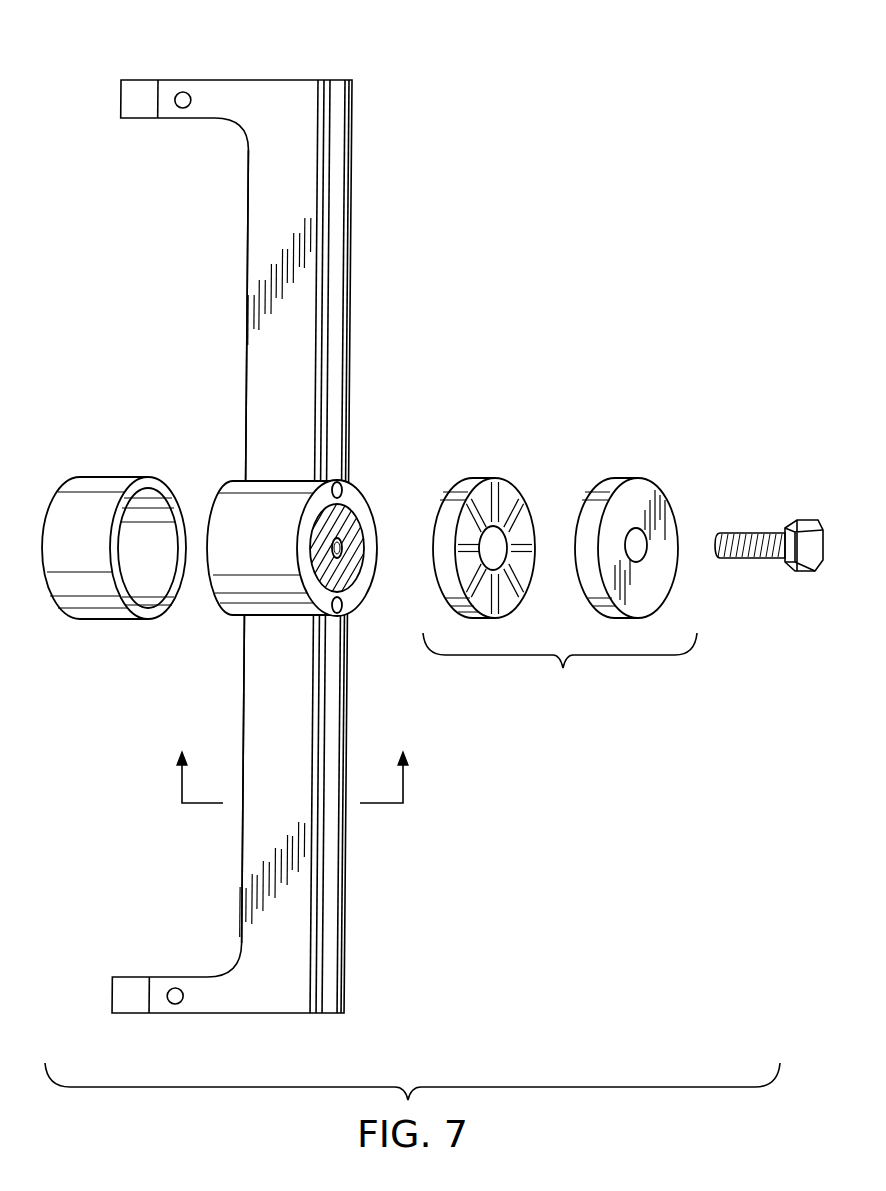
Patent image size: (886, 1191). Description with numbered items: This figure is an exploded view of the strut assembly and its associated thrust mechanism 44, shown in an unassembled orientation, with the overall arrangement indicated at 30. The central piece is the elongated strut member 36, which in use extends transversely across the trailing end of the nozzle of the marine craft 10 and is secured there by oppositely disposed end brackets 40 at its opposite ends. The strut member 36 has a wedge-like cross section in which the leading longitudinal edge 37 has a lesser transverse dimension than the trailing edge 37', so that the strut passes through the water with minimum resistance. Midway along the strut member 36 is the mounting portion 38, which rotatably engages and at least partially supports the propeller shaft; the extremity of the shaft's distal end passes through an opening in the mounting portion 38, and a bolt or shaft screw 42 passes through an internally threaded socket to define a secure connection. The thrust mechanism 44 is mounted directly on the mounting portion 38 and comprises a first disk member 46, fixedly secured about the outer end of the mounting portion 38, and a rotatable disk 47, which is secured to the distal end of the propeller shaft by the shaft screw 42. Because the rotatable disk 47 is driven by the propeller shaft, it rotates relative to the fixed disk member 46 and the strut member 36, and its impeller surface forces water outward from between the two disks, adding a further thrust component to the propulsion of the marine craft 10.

The mounting bracket assembly 30 is at (380, 131).
The strut member 36 is at (310, 200).
The leading longitudinal edge 37 is at (176, 546).
The trailing edge 37' is at (402, 546).
The mounting portion 38 is at (356, 488).
The end bracket 40 is at (110, 483).
The shaft screw 42 is at (760, 530).
The thrust mechanism 44 is at (560, 540).
The first disk member 46 is at (478, 482).
The rotatable disk 47 is at (618, 482).
The marine craft 10 is at (292, 765).